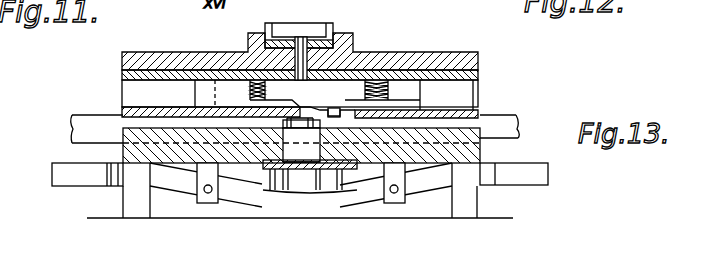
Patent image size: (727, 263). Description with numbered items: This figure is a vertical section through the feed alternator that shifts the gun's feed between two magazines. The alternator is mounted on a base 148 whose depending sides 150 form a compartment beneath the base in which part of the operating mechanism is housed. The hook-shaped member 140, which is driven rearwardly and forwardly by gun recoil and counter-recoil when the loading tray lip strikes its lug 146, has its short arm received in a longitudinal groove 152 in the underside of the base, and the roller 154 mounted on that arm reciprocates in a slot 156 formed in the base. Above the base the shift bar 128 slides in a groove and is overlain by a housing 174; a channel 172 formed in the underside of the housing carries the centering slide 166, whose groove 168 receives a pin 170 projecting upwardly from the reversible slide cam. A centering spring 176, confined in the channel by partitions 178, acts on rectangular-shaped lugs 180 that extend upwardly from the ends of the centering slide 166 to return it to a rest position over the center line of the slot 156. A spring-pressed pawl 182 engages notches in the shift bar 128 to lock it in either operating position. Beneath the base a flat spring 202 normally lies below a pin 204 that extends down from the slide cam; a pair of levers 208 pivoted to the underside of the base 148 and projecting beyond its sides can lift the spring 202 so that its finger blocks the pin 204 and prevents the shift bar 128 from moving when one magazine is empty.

The shift bar 128 is at (516, 116).
The hook-shaped member 140 is at (301, 45).
The lug 146 is at (289, 18).
The base 148 is at (480, 152).
The depending sides 150 is at (123, 201).
The longitudinal groove 152 is at (340, 176).
The roller 154 is at (292, 137).
The slot 156 is at (268, 177).
The centering slide 166 is at (480, 89).
The groove 168 is at (330, 106).
The pin 170 is at (338, 109).
The channel 172 is at (122, 87).
The housing 174 is at (372, 56).
The centering spring 176 is at (380, 86).
The partitions 178 is at (200, 89).
The rectangular-shaped lugs 180 is at (228, 86).
The spring-pressed pawl 182 is at (198, 122).
The flat spring 202 is at (300, 170).
The pin 204 is at (291, 170).
The levers 208 is at (60, 175).